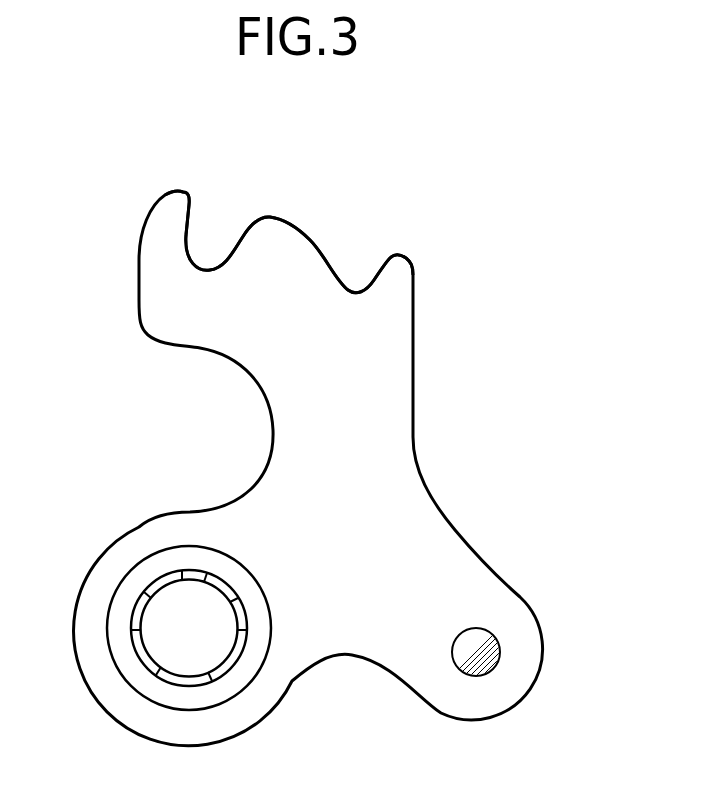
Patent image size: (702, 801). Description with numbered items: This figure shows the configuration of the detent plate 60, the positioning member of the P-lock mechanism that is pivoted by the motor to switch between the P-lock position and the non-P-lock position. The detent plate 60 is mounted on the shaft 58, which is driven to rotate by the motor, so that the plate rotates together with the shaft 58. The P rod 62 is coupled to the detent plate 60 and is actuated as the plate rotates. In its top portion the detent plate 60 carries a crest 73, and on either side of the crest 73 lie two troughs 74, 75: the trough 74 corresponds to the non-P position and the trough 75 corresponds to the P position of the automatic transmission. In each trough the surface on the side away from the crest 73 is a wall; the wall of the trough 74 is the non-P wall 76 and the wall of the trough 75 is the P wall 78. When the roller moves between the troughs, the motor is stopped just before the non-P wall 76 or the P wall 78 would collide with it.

The detent plate 60 is at (403, 433).
The crest 73 is at (310, 232).
The trough 74 is at (377, 272).
The trough 75 is at (230, 253).
The non-P wall 76 is at (387, 258).
The P wall 78 is at (187, 225).
The shaft 58 is at (160, 610).
The P rod 62 is at (485, 637).